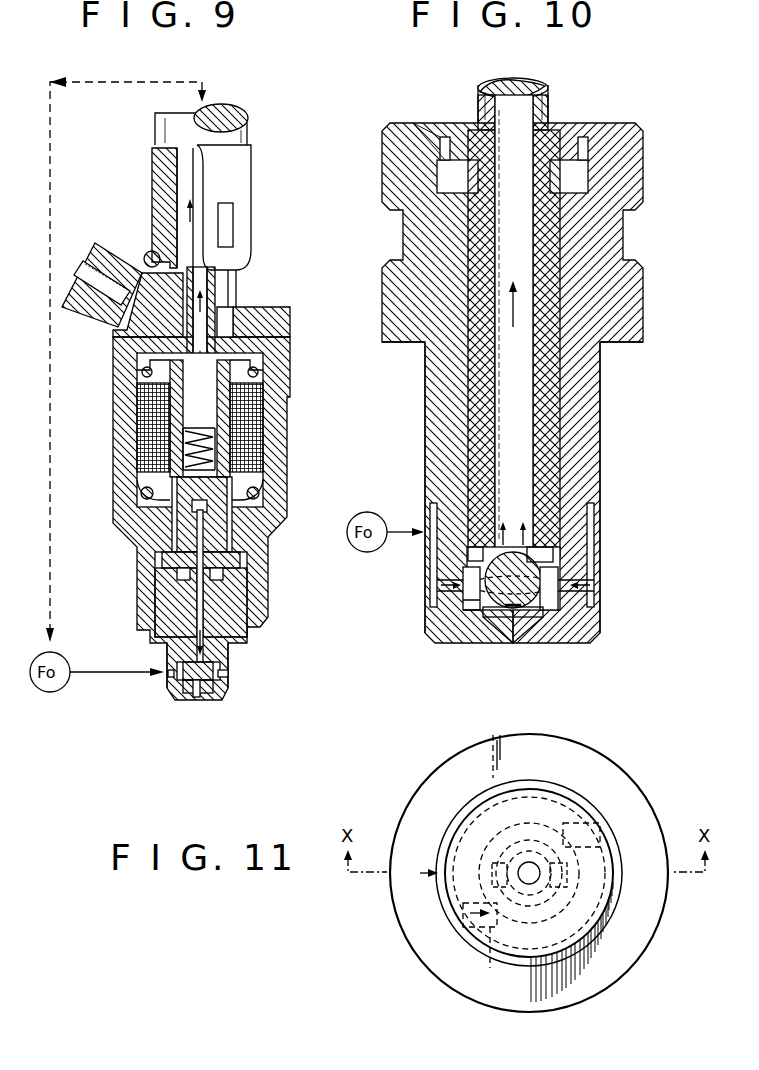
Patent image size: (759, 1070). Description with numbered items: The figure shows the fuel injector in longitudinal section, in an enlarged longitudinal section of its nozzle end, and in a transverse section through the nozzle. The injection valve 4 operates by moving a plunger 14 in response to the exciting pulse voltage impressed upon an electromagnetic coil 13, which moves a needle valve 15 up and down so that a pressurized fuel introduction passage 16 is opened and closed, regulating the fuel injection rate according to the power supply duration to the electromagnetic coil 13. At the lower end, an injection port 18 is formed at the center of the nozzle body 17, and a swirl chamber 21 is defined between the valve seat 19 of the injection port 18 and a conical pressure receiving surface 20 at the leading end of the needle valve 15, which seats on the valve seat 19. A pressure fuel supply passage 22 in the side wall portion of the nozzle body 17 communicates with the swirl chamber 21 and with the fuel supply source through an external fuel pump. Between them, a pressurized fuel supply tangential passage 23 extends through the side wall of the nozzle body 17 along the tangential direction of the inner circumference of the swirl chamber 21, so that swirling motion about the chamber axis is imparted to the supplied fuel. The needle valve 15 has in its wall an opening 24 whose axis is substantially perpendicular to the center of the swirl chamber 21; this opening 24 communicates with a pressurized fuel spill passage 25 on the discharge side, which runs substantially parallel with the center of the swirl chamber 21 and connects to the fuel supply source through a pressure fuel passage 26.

In FIG. 9, the injection valve 4 is at (266, 240).
In FIG. 10, the injection valve 4 is at (643, 250).
In FIG. 11, the injection valve 4 is at (394, 953).
In FIG. 9, the electromagnetic coil 13 is at (262, 409).
In FIG. 9, the plunger 14 is at (177, 531).
In FIG. 9, the needle valve 15 is at (210, 596).
In FIG. 10, the needle valve 15 is at (543, 366).
In FIG. 11, the needle valve 15 is at (587, 907).
In FIG. 10, the pressurized fuel introduction passage 16 is at (518, 395).
In FIG. 9, the nozzle body 17 is at (230, 620).
In FIG. 10, the nozzle body 17 is at (575, 441).
In FIG. 11, the nozzle body 17 is at (443, 958).
In FIG. 9, the injection port 18 is at (199, 700).
In FIG. 10, the injection port 18 is at (525, 630).
In FIG. 11, the injection port 18 is at (533, 884).
In FIG. 9, the valve seat 19 is at (184, 697).
In FIG. 10, the valve seat 19 is at (497, 620).
In FIG. 10, the conical pressure receiving surface 20 is at (537, 618).
In FIG. 10, the swirl chamber 21 is at (472, 605).
In FIG. 9, the pressure fuel supply passage 22 is at (168, 674).
In FIG. 10, the pressure fuel supply passage 22 is at (427, 545).
In FIG. 11, the pressure fuel supply passage 22 is at (437, 860).
In FIG. 10, the pressurized fuel supply tangential passage 23 is at (583, 588).
In FIG. 11, the pressurized fuel supply tangential passage 23 is at (593, 830).
In FIG. 10, the opening 24 is at (540, 552).
In FIG. 11, the opening 24 is at (468, 915).
In FIG. 9, the pressurized fuel spill passage 25 is at (205, 293).
In FIG. 10, the pressurized fuel spill passage 25 is at (517, 255).
In FIG. 9, the pressure fuel passage 26 is at (187, 184).